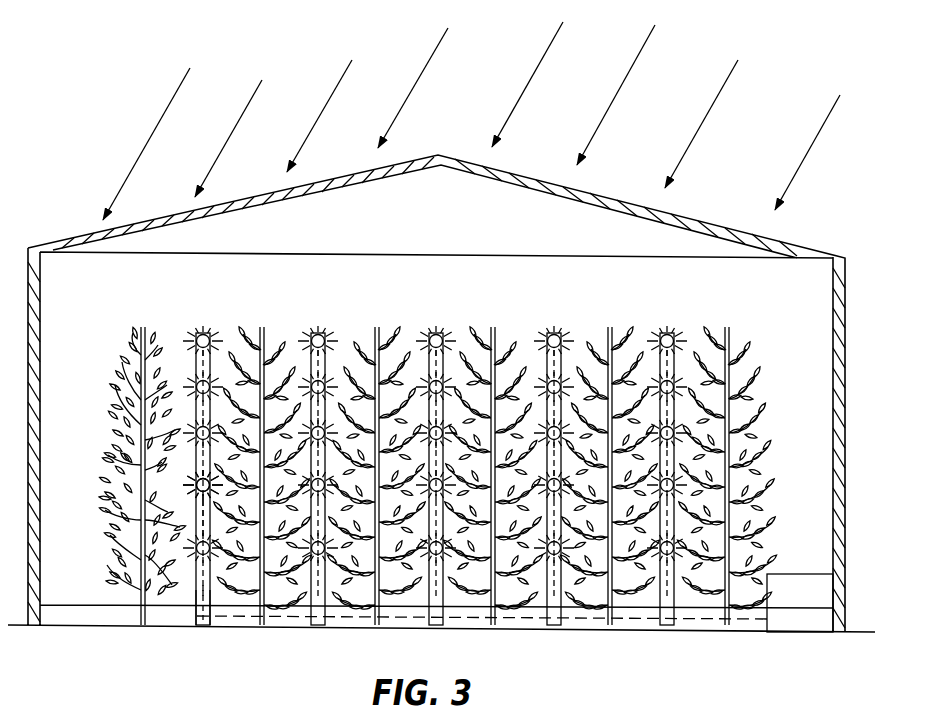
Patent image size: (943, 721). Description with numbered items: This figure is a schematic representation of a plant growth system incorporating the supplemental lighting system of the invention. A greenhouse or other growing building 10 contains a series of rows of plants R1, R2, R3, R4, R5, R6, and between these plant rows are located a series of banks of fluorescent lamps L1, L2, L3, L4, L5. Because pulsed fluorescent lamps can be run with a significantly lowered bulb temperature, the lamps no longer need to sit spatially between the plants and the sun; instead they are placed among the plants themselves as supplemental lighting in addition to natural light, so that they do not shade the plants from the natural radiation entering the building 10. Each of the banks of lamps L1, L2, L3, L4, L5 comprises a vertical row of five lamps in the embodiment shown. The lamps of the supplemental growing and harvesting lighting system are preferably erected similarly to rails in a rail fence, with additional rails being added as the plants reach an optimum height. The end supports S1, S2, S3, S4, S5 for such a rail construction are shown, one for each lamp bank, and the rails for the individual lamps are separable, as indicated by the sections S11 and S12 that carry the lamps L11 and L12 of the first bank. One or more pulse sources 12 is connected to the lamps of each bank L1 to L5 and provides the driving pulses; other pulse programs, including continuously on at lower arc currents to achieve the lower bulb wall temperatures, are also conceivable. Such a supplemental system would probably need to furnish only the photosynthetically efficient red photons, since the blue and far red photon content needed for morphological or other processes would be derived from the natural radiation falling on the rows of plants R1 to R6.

The greenhouse 10 is at (598, 184).
The pulse source 12 is at (808, 574).
The row of plants R1 is at (127, 320).
The row of plants R2 is at (253, 322).
The row of plants R3 is at (371, 322).
The row of plants R4 is at (481, 322).
The row of plants R5 is at (606, 322).
The row of plants R6 is at (715, 322).
The bank of fluorescent lamps L1 is at (186, 331).
The bank of fluorescent lamps L2 is at (300, 333).
The bank of fluorescent lamps L3 is at (425, 333).
The bank of fluorescent lamps L4 is at (540, 333).
The bank of fluorescent lamps L5 is at (656, 333).
The end support S1 is at (208, 356).
The end support S2 is at (326, 358).
The end support S3 is at (445, 356).
The end support S4 is at (561, 360).
The end support S5 is at (671, 356).
The lamp L11 is at (190, 585).
The section S11 is at (208, 583).
The lamp L12 is at (195, 478).
The section S12 is at (206, 512).